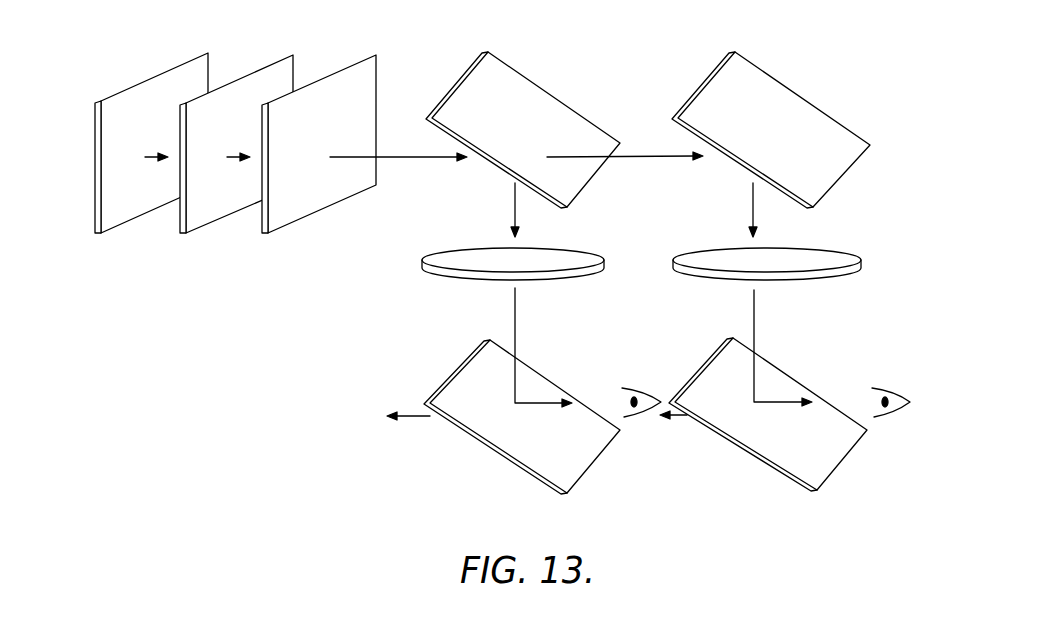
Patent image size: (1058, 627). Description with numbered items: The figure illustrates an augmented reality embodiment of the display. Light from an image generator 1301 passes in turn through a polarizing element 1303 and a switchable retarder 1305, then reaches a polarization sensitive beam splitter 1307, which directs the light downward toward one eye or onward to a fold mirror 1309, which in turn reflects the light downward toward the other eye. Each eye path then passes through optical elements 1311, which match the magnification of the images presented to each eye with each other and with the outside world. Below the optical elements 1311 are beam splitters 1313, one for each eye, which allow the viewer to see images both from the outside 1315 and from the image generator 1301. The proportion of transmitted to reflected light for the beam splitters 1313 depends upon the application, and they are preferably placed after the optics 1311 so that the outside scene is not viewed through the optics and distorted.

The image generator 1301 is at (209, 57).
The polarizing element 1303 is at (295, 57).
The switchable retarder 1305 is at (379, 57).
The polarization sensitive beam splitter 1307 is at (502, 67).
The fold mirror 1309 is at (762, 75).
The optical elements 1311 is at (677, 277).
The beam splitters 1313 is at (570, 478).
The outside 1315 is at (397, 417).